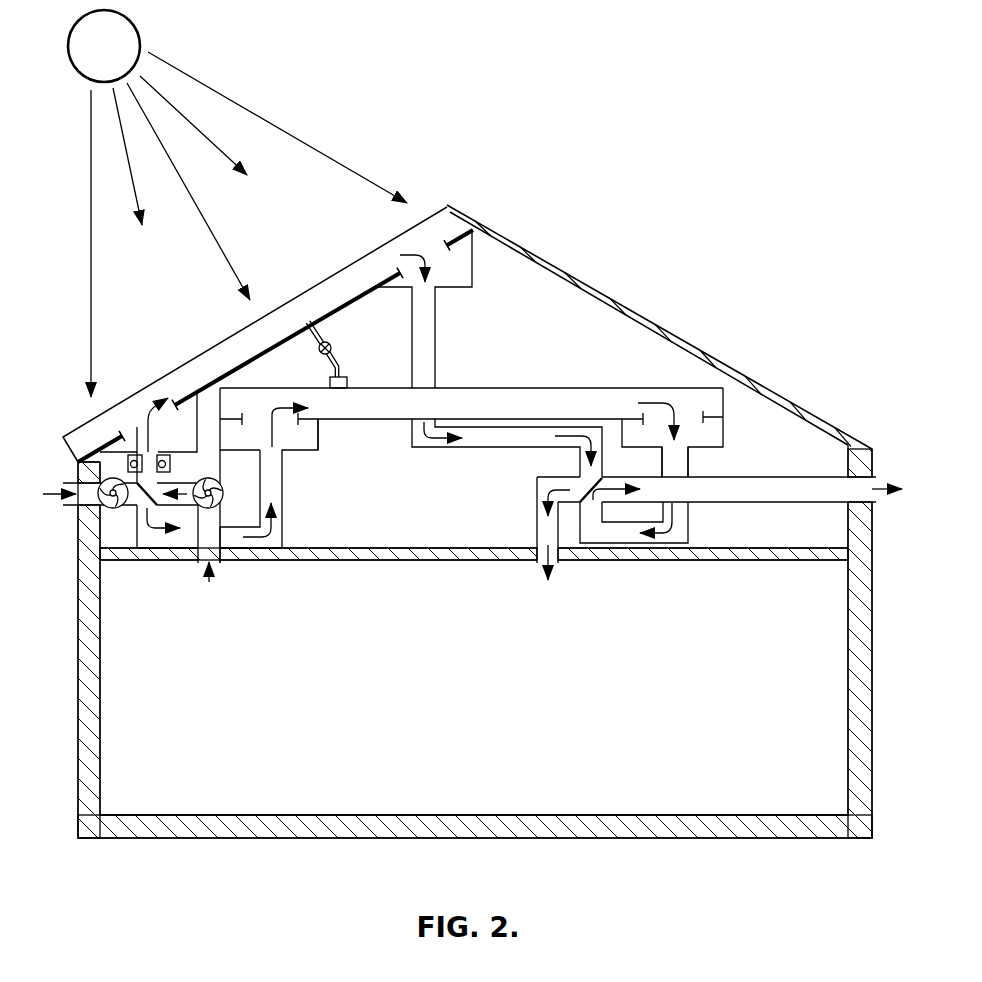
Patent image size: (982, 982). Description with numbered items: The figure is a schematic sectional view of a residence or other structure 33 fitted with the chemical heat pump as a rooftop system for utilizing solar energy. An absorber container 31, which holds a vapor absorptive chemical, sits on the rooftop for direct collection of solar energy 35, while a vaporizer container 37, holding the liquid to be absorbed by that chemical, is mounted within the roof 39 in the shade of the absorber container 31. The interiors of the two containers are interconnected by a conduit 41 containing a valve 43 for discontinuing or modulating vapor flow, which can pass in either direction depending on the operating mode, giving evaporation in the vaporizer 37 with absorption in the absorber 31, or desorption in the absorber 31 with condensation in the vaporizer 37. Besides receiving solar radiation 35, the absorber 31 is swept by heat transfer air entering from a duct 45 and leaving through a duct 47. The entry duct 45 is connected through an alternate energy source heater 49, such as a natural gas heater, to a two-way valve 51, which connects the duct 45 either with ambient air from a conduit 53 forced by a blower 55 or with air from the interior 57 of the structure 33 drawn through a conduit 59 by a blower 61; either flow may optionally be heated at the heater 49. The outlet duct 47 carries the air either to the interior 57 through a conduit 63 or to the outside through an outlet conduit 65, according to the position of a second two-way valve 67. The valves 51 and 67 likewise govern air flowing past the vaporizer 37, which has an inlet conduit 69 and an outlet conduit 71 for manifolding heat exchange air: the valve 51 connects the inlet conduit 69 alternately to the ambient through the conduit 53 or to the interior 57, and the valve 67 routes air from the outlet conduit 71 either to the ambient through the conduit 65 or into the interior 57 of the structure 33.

The absorber container 31 is at (376, 269).
The structure 33 is at (848, 615).
The solar energy 35 is at (288, 128).
The vaporizer container 37 is at (593, 397).
The roof 39 is at (605, 296).
The conduit 41 is at (340, 364).
The valve 43 is at (333, 343).
The duct 45 is at (190, 427).
The duct 47 is at (473, 267).
The alternate energy source heater 49 is at (171, 465).
The two-way valve 51 is at (128, 508).
The conduit 53 is at (70, 487).
The blower 55 is at (118, 508).
The interior 57 is at (452, 701).
The conduit 59 is at (222, 535).
The blower 61 is at (220, 480).
The conduit 63 is at (537, 533).
The outlet conduit 65 is at (822, 485).
The two-way valve 67 is at (590, 535).
The inlet conduit 69 is at (318, 436).
The outlet conduit 71 is at (721, 430).